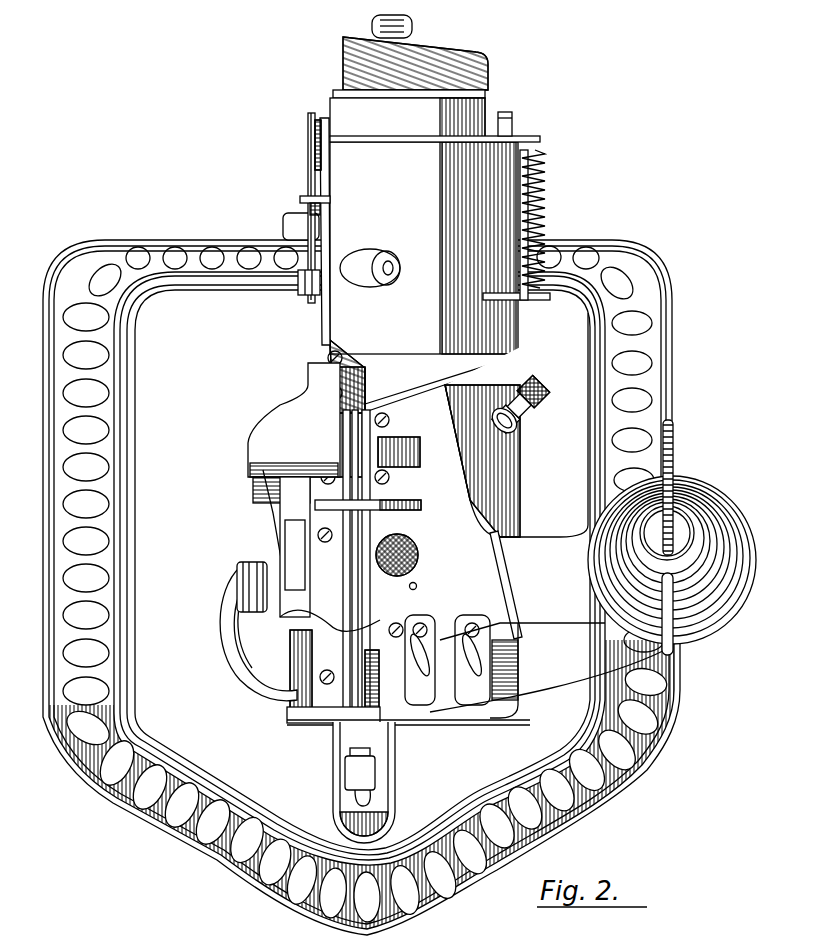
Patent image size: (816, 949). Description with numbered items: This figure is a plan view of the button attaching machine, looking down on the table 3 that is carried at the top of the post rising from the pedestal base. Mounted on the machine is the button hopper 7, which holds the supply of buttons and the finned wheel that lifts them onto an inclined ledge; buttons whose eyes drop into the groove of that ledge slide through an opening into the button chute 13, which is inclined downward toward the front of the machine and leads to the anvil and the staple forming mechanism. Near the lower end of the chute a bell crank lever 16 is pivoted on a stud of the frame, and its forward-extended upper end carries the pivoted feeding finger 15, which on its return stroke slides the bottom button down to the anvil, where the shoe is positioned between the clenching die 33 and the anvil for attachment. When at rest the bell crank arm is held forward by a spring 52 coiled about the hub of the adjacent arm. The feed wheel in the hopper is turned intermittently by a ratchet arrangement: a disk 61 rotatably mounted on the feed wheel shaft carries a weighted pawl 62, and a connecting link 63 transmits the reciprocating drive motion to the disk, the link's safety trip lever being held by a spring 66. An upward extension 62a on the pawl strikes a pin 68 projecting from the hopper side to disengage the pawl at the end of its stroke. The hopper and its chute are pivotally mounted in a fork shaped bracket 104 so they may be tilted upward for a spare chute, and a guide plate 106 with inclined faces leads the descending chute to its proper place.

The table 3 is at (361, 587).
The button hopper 7 is at (449, 58).
The button chute 13 is at (365, 588).
The finger 15 is at (355, 735).
The bell crank lever 16 is at (262, 508).
The clenching die 33 is at (360, 764).
The spring 52 is at (255, 588).
The disk 61 is at (321, 118).
The pawl 62 is at (308, 176).
The upward extension on the pawl 62a is at (308, 121).
The connecting link 63 is at (320, 338).
The spring 66 is at (305, 297).
The pin 68 is at (298, 199).
The fork shaped bracket 104 is at (540, 232).
The guide plate 106 is at (421, 506).